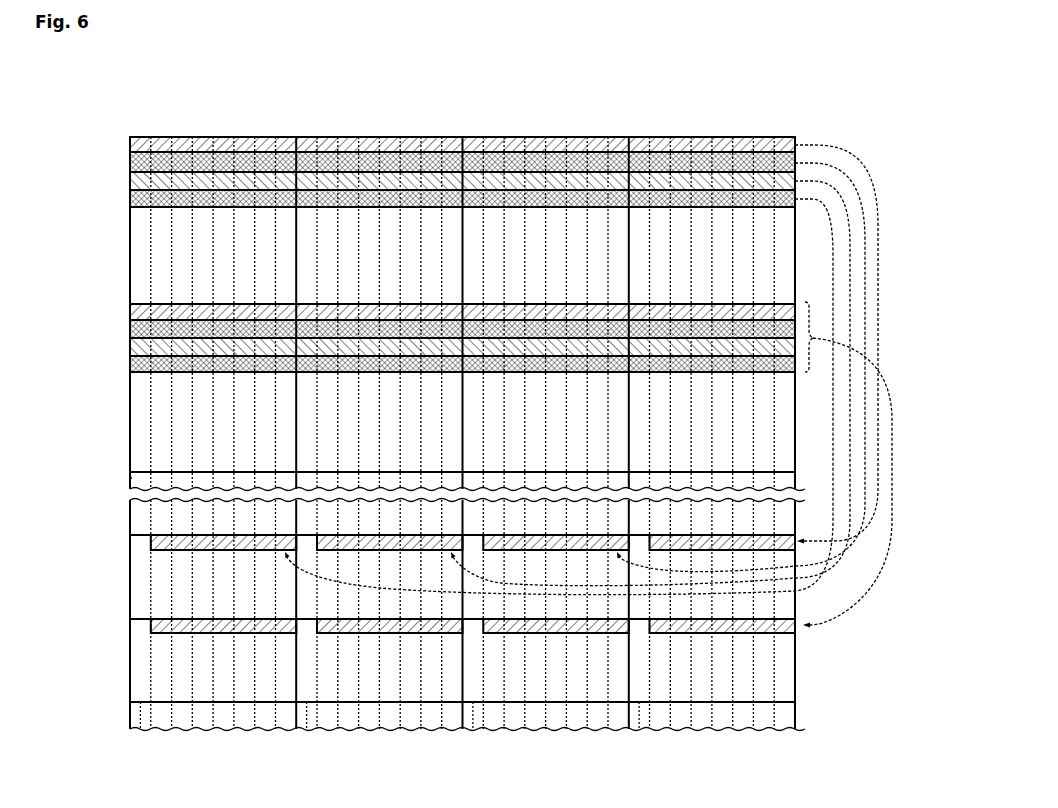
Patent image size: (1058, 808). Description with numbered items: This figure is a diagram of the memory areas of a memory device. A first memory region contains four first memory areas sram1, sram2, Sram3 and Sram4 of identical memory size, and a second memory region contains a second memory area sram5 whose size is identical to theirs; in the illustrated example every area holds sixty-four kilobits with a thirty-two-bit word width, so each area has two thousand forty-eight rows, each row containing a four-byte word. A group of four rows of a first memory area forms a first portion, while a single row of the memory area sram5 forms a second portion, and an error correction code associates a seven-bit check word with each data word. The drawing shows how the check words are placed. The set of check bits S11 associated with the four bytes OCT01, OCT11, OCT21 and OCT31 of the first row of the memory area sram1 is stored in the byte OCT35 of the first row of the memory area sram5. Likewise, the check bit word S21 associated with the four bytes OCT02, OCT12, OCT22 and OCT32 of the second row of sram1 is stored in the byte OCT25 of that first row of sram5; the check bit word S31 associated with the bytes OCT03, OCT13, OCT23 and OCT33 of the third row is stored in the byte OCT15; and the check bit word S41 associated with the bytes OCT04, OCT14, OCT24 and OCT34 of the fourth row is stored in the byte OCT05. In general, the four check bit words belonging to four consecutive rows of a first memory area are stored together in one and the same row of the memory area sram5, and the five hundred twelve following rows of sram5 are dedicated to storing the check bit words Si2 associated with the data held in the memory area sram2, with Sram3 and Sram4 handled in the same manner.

The byte OCT01 is at (136, 136).
The byte OCT02 is at (181, 136).
The byte OCT03 is at (224, 136).
The byte OCT04 is at (267, 136).
The byte OCT05 is at (204, 552).
The byte OCT11 is at (306, 136).
The byte OCT12 is at (348, 136).
The byte OCT13 is at (389, 136).
The byte OCT14 is at (431, 136).
The byte OCT15 is at (370, 552).
The byte OCT21 is at (471, 136).
The byte OCT22 is at (512, 136).
The byte OCT23 is at (556, 136).
The byte OCT24 is at (598, 136).
The byte OCT25 is at (536, 552).
The byte OCT31 is at (637, 136).
The byte OCT32 is at (678, 136).
The byte OCT33 is at (720, 136).
The byte OCT34 is at (763, 136).
The byte OCT35 is at (702, 552).
The set of check bits S11 is at (878, 211).
The check bit word S21 is at (866, 236).
The check bit word S31 is at (851, 260).
The check bit word S41 is at (835, 285).
The check bit words Si2 is at (894, 484).
The first memory area sram1 is at (122, 137).
The first memory area sram2 is at (122, 304).
The first memory area Sram3 is at (130, 484).
The first memory area Sram4 is at (130, 519).
The second memory area sram5 is at (122, 535).